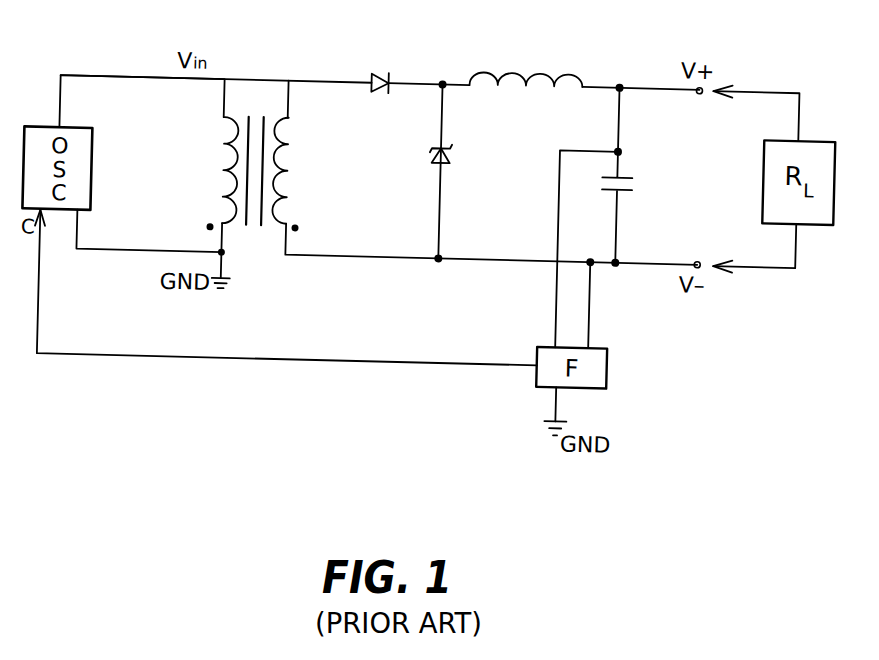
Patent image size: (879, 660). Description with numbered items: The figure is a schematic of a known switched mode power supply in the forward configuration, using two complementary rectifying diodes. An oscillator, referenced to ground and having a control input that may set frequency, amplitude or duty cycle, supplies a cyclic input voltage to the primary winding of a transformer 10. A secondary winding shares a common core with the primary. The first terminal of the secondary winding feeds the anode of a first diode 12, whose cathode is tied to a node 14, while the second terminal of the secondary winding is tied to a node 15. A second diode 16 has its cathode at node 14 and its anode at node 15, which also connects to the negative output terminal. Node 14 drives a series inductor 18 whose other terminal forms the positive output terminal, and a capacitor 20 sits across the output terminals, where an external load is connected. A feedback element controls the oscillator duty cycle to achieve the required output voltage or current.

The transformer 10 is at (255, 121).
The first diode 12 is at (374, 74).
The node 14 is at (441, 71).
The node 15 is at (621, 261).
The second diode 16 is at (451, 157).
The series inductor 18 is at (552, 69).
The capacitor 20 is at (621, 172).